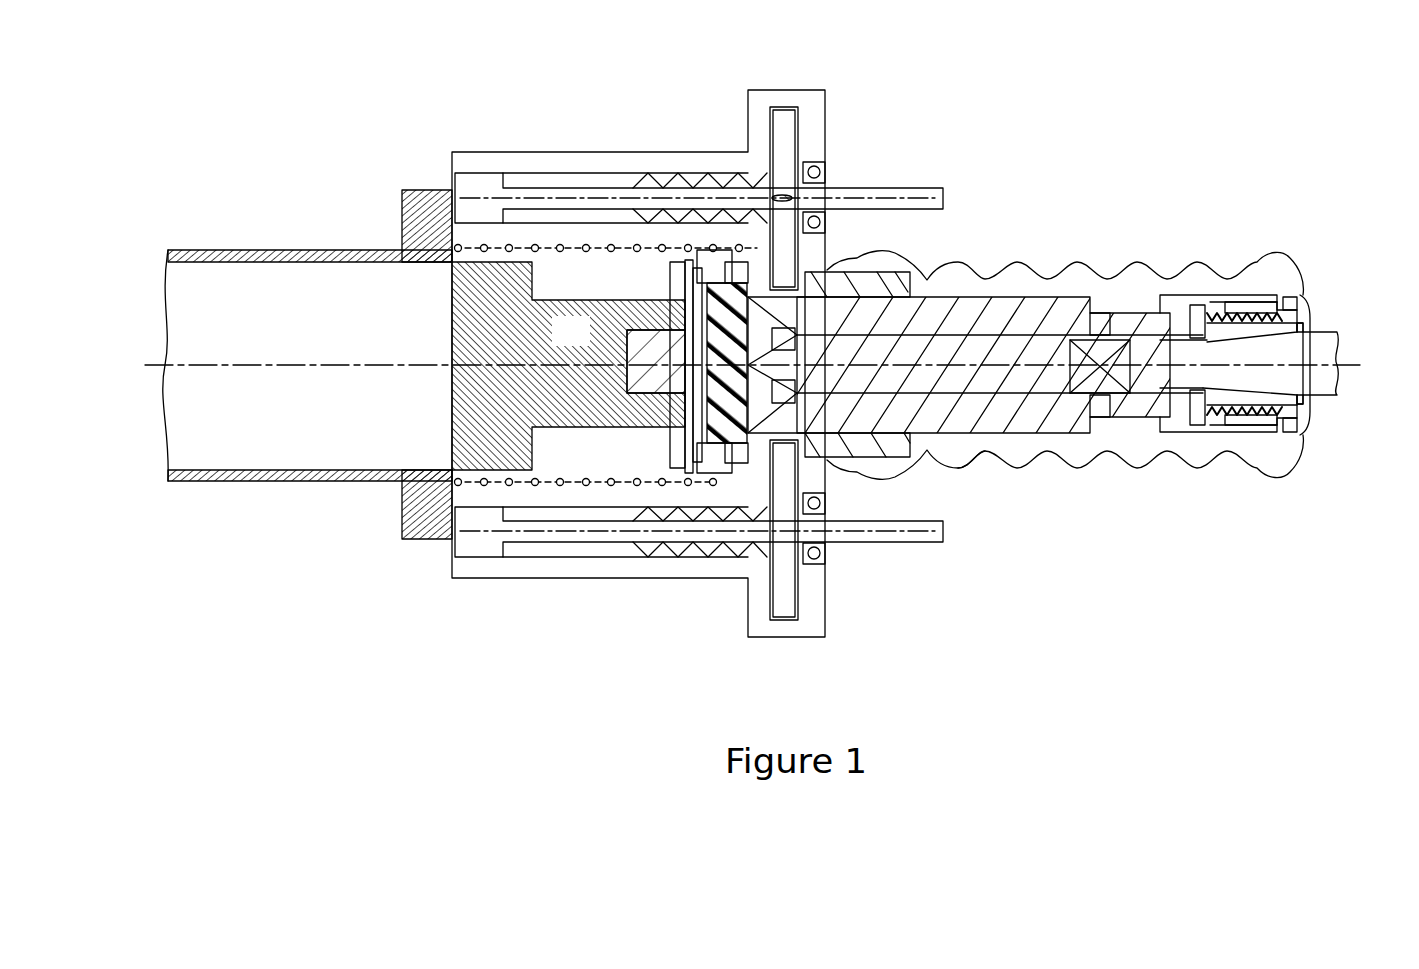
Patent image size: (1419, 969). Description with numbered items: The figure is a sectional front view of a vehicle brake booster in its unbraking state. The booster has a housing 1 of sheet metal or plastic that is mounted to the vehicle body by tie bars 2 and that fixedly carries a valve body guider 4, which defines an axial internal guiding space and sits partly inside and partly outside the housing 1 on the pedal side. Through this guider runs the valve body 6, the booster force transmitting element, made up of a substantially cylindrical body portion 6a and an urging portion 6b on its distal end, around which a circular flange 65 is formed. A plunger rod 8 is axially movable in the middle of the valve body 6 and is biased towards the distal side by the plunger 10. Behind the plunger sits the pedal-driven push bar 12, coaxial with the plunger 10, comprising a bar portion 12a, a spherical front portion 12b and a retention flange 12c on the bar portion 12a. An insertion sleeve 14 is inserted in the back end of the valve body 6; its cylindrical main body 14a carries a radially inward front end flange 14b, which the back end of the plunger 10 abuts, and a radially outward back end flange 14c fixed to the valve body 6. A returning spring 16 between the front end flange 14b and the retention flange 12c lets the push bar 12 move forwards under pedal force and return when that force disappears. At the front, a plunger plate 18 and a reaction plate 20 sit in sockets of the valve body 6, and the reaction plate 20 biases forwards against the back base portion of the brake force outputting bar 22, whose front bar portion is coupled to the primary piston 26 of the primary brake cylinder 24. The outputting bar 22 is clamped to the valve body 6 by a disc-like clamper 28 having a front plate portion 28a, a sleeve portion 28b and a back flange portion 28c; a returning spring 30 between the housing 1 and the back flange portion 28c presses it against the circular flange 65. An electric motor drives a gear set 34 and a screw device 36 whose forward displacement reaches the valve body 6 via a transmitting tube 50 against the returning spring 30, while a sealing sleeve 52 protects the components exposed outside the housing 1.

The housing 1 is at (827, 90).
The tie bars 2 is at (917, 193).
The valve body guider 4 is at (913, 277).
The valve body 6 is at (1052, 287).
The body portion 6a is at (1097, 307).
The urging portion 6b is at (727, 470).
The plunger rod 8 is at (1007, 380).
The plunger 10 is at (1120, 397).
The push bar 12 is at (1325, 400).
The bar portion 12a is at (1313, 345).
The front portion 12b is at (1158, 380).
The retention flange 12c is at (1300, 333).
The insertion sleeve 14 is at (1235, 423).
The main body 14a is at (1240, 303).
The front end flange 14b is at (1203, 340).
The back end flange 14c is at (1283, 300).
The returning spring 16 is at (1283, 420).
The plunger plate 18 is at (807, 427).
The reaction plate 20 is at (703, 467).
The brake force outputting bar 22 is at (652, 387).
The primary brake cylinder 24 is at (269, 449).
The primary piston 26 is at (562, 432).
The clamper 28 is at (684, 319).
The front plate portion 28a is at (697, 283).
The sleeve portion 28b is at (702, 260).
The back flange portion 28c is at (717, 250).
The returning spring 30 is at (557, 254).
The gear set 34 is at (807, 600).
The screw device 36 is at (698, 562).
The transmitting tube 50 is at (637, 167).
The sealing sleeve 52 is at (977, 453).
The circular flange 65 is at (760, 245).